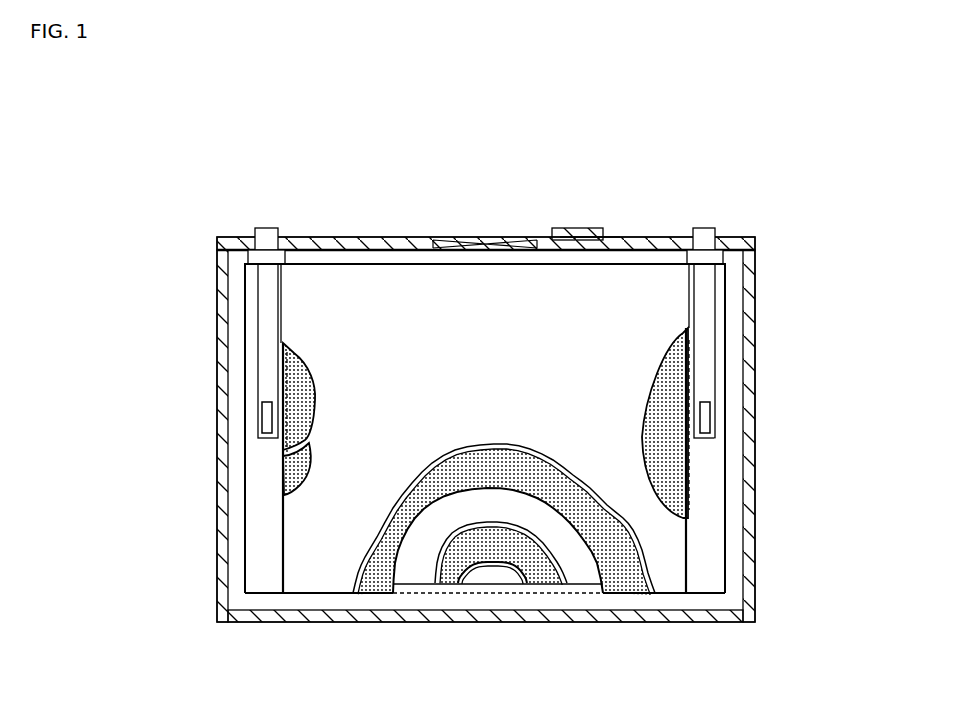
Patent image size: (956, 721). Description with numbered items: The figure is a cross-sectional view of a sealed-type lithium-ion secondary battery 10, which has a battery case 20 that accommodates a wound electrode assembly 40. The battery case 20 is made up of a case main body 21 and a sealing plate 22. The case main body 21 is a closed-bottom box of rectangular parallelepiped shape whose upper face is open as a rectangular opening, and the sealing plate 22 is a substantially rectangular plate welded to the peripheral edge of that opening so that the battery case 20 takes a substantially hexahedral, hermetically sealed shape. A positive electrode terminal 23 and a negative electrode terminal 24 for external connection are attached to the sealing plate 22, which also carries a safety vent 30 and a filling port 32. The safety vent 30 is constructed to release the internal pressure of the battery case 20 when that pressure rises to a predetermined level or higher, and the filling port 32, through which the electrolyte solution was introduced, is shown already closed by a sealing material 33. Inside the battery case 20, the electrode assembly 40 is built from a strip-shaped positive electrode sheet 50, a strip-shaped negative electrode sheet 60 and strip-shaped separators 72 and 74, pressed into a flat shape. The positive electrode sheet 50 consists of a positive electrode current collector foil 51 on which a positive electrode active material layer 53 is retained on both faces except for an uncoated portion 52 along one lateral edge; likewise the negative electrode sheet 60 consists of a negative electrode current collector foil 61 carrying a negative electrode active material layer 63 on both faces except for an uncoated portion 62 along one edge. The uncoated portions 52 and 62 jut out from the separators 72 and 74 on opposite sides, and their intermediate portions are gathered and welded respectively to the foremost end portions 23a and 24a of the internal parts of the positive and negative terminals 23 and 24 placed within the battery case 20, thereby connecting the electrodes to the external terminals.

The lithium-ion secondary battery 10 is at (756, 204).
The battery case 20 is at (758, 345).
The case main body 21 is at (757, 593).
The sealing plate 22 is at (655, 238).
The positive electrode terminal 23 is at (266, 228).
The foremost end portion of positive internal terminal 23a is at (261, 408).
The negative electrode terminal 24 is at (700, 228).
The foremost end portion of negative internal terminal 24a is at (718, 405).
The safety vent 30 is at (487, 240).
The filling port 32 is at (588, 206).
The sealing material 33 is at (572, 229).
The electrode assembly 40 is at (397, 286).
The positive electrode sheet 50 is at (458, 577).
The positive electrode current collector foil 51 is at (243, 550).
The uncoated portion 52 is at (262, 570).
The positive electrode active material layer 53 is at (325, 390).
The negative electrode sheet 60 is at (283, 484).
The negative electrode current collector foil 61 is at (727, 485).
The uncoated portion 62 is at (715, 457).
The negative electrode active material layer 63 is at (306, 478).
The separator 72 is at (318, 530).
The separator 74 is at (283, 453).